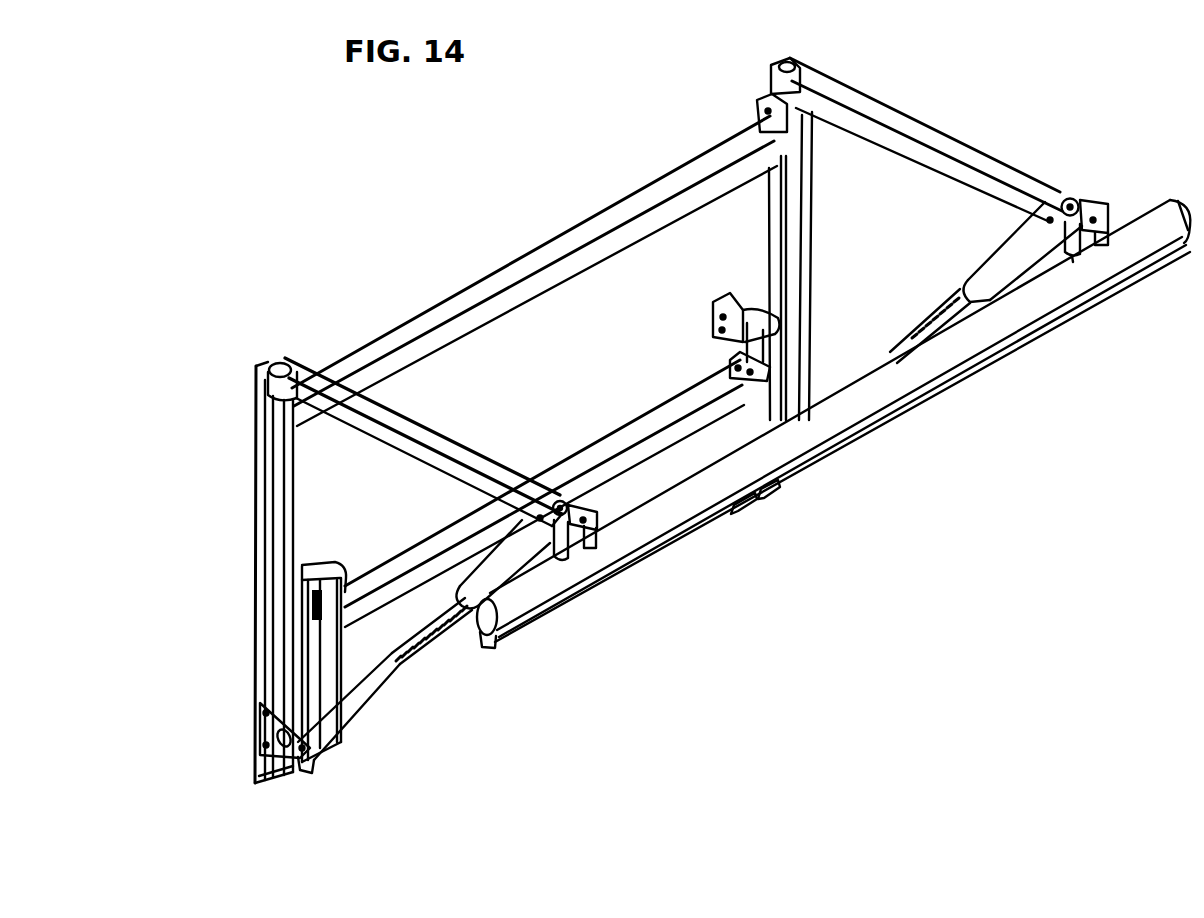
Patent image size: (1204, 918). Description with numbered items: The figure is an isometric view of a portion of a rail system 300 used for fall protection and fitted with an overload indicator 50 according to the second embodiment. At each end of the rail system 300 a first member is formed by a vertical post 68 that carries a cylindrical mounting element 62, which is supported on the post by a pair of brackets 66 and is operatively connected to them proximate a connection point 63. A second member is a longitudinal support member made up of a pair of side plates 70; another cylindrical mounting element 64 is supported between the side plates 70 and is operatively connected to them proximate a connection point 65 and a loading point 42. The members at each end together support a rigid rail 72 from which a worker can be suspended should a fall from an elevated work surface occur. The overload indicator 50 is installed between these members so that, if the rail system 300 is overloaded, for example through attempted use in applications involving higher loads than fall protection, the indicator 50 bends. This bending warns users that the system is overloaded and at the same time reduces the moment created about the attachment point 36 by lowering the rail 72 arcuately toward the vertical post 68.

The attachment point 36 is at (272, 387).
The loading point 42 is at (593, 508).
The overload indicator 50 is at (428, 648).
The cylindrical mounting element 62 is at (352, 704).
The connection point 63 is at (308, 766).
The cylindrical mounting element 64 is at (470, 597).
The connection point 65 is at (539, 515).
The brackets 66 is at (258, 737).
The vertical post 68 is at (283, 548).
The side plates 70 is at (441, 466).
The rigid rail 72 is at (537, 582).
The rail system 300 is at (771, 518).